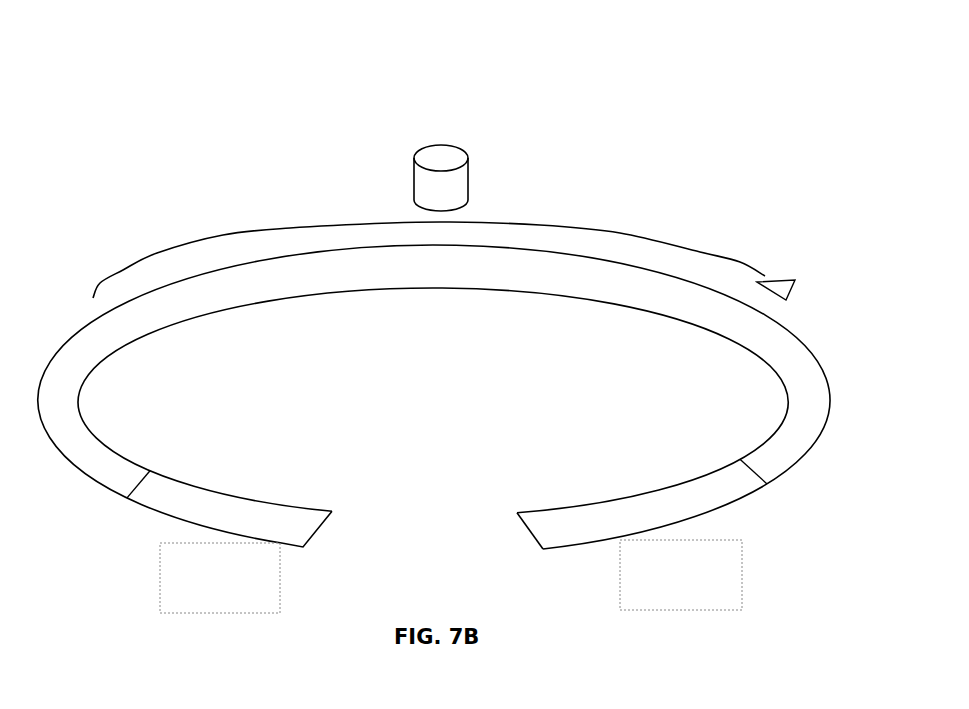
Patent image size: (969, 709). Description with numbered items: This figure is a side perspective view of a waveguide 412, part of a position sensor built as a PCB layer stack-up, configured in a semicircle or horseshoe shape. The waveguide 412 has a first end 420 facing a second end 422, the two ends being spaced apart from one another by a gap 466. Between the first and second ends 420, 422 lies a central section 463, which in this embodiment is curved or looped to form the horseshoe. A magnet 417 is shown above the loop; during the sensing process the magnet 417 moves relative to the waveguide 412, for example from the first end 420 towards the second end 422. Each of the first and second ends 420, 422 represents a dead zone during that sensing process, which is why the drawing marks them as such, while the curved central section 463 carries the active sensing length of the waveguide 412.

The waveguide 412 is at (290, 152).
The magnet 417 is at (418, 173).
The central section 463 is at (436, 272).
The first end 420 is at (277, 524).
The second end 422 is at (557, 525).
The gap 466 is at (427, 527).